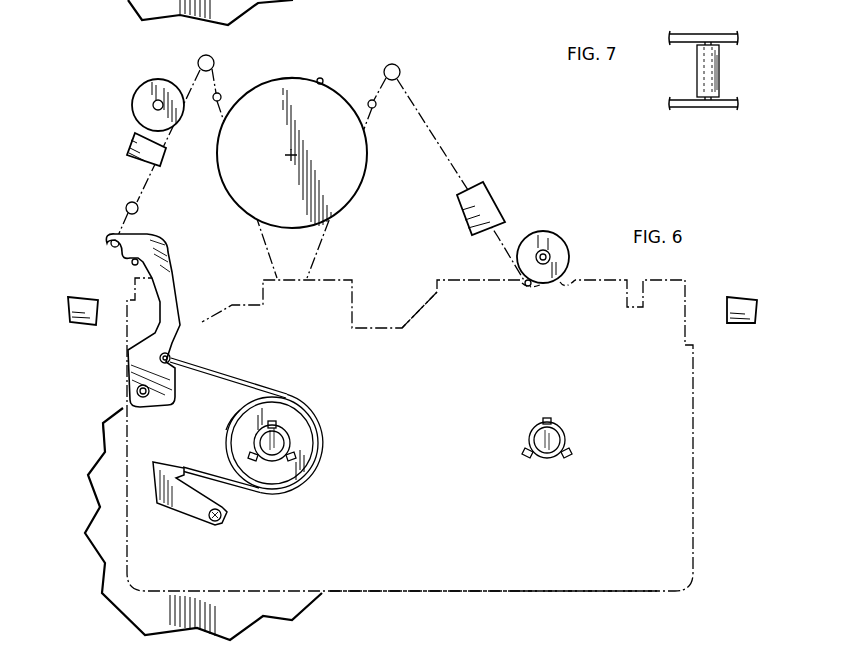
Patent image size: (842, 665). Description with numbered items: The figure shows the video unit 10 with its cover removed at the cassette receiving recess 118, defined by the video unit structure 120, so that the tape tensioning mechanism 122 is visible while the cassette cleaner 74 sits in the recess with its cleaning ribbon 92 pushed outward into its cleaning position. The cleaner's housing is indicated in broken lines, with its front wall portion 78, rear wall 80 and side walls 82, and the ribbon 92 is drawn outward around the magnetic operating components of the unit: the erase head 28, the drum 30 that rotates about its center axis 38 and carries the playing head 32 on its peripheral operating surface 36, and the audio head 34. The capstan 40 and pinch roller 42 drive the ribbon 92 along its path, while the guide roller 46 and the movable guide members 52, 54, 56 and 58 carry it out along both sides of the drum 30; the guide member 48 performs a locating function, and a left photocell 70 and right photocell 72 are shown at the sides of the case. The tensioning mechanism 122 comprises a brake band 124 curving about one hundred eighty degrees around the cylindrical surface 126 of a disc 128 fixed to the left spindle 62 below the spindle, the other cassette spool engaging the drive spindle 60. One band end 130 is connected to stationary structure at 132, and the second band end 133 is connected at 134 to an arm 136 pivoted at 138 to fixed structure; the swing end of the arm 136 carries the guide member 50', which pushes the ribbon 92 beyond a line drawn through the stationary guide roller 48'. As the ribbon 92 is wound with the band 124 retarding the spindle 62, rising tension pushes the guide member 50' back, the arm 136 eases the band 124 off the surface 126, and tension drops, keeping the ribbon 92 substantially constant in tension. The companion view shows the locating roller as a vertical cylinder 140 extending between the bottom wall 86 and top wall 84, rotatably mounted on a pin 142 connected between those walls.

In FIG. 6, the video unit 10 is at (478, 165).
In FIG. 6, the erase head 28 is at (130, 140).
In FIG. 6, the drum 30 is at (331, 103).
In FIG. 6, the playing head 32 is at (322, 79).
In FIG. 6, the audio head 34 is at (490, 205).
In FIG. 6, the peripheral operating surface 36 is at (290, 78).
In FIG. 6, the center axis 38 is at (290, 153).
In FIG. 6, the capstan 40 is at (520, 284).
In FIG. 6, the pinch roller 42 is at (555, 240).
In FIG. 6, the guide roller 46 is at (132, 105).
In FIG. 6, the guide member 48 is at (99, 261).
In FIG. 6, the stationary guide roller 48' is at (101, 206).
In FIG. 6, the guide member 50' is at (86, 238).
In FIG. 6, the guide member 52 is at (198, 61).
In FIG. 6, the guide member 54 is at (221, 95).
In FIG. 6, the guide member 56 is at (375, 108).
In FIG. 6, the guide member 58 is at (400, 71).
In FIG. 6, the drive spindle 60 is at (533, 436).
In FIG. 6, the drive spindle 62 is at (288, 438).
In FIG. 6, the left photocell 70 is at (70, 297).
In FIG. 6, the right photocell 72 is at (742, 323).
In FIG. 6, the cassette cleaner 74 is at (455, 592).
In FIG. 6, the front wall portion 78 is at (442, 278).
In FIG. 6, the rear wall 80 is at (538, 592).
In FIG. 6, the side wall 82 is at (125, 374).
In FIG. 7, the top wall 84 is at (718, 34).
In FIG. 7, the bottom wall 86 is at (722, 107).
In FIG. 6, the cleaning ribbon 92 is at (425, 112).
In FIG. 6, the cassette receiving recess 118 is at (118, 493).
In FIG. 6, the video unit structure 120 is at (100, 482).
In FIG. 6, the tape tensioning mechanism 122 is at (318, 402).
In FIG. 6, the brake band 124 is at (322, 458).
In FIG. 6, the cylindrical surface 126 is at (248, 400).
In FIG. 6, the disc 128 is at (302, 465).
In FIG. 6, the band end 130 is at (198, 468).
In FIG. 6, the stationary structure connection 132 is at (203, 514).
In FIG. 6, the second band end 133 is at (215, 375).
In FIG. 6, the band-to-arm connection 134 is at (170, 357).
In FIG. 6, the arm 136 is at (170, 256).
In FIG. 6, the pivot connection 138 is at (137, 391).
In FIG. 7, the vertical cylinder 140 is at (716, 68).
In FIG. 7, the pin 142 is at (708, 100).